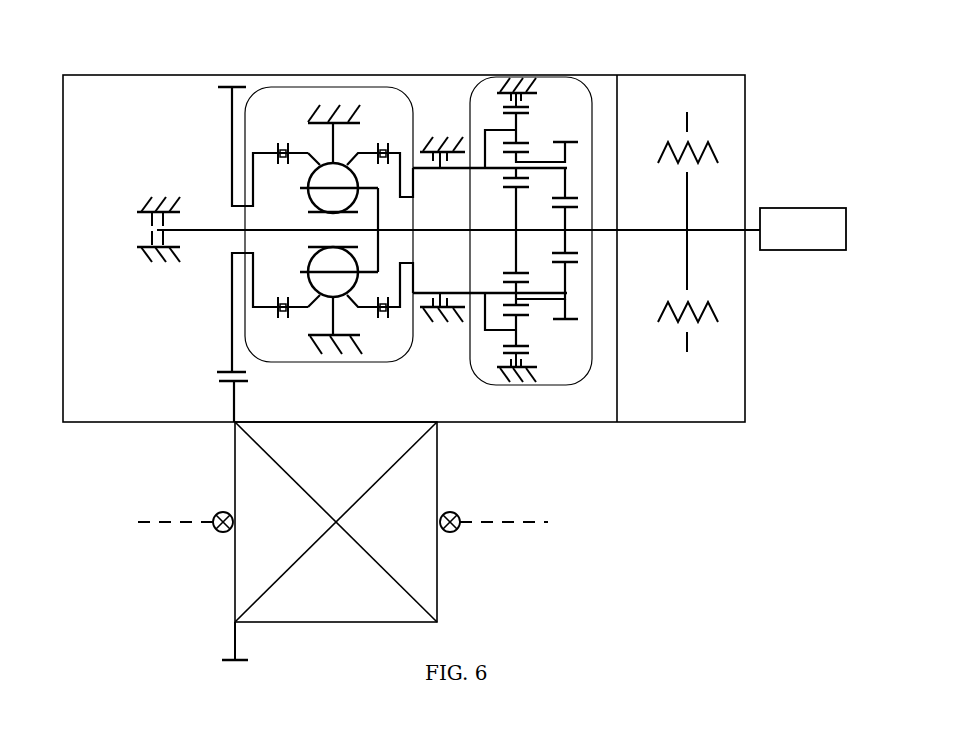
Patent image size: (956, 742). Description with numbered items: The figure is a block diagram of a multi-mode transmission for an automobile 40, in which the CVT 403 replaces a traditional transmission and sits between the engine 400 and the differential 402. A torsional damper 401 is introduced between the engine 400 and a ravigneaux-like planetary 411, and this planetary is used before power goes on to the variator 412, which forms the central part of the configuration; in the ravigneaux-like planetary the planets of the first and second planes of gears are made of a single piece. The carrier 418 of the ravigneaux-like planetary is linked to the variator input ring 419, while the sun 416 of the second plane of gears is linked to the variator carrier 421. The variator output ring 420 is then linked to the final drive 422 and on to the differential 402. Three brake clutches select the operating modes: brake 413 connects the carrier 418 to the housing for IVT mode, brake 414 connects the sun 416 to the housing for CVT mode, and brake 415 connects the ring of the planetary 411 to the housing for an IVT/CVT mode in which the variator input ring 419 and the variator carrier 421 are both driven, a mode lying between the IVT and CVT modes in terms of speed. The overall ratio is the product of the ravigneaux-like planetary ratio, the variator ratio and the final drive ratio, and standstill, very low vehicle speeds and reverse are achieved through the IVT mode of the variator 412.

The automobile 40 is at (607, 553).
The engine 400 is at (833, 208).
The torsional damper 401 is at (718, 74).
The differential 402 is at (275, 624).
The CVT 403 is at (357, 84).
The ravigneaux-like planetary 411 is at (472, 102).
The variator 412 is at (302, 87).
The brake clutch for IVT mode 413 is at (440, 133).
The brake clutch for CVT mode 414 is at (152, 201).
The brake clutch for IVT/CVT mode 415 is at (502, 384).
The sun 416 is at (510, 217).
The carrier 418 is at (455, 292).
The variator input ring 419 is at (362, 163).
The variator output ring 420 is at (291, 145).
The variator carrier 421 is at (380, 218).
The final drive 422 is at (231, 408).